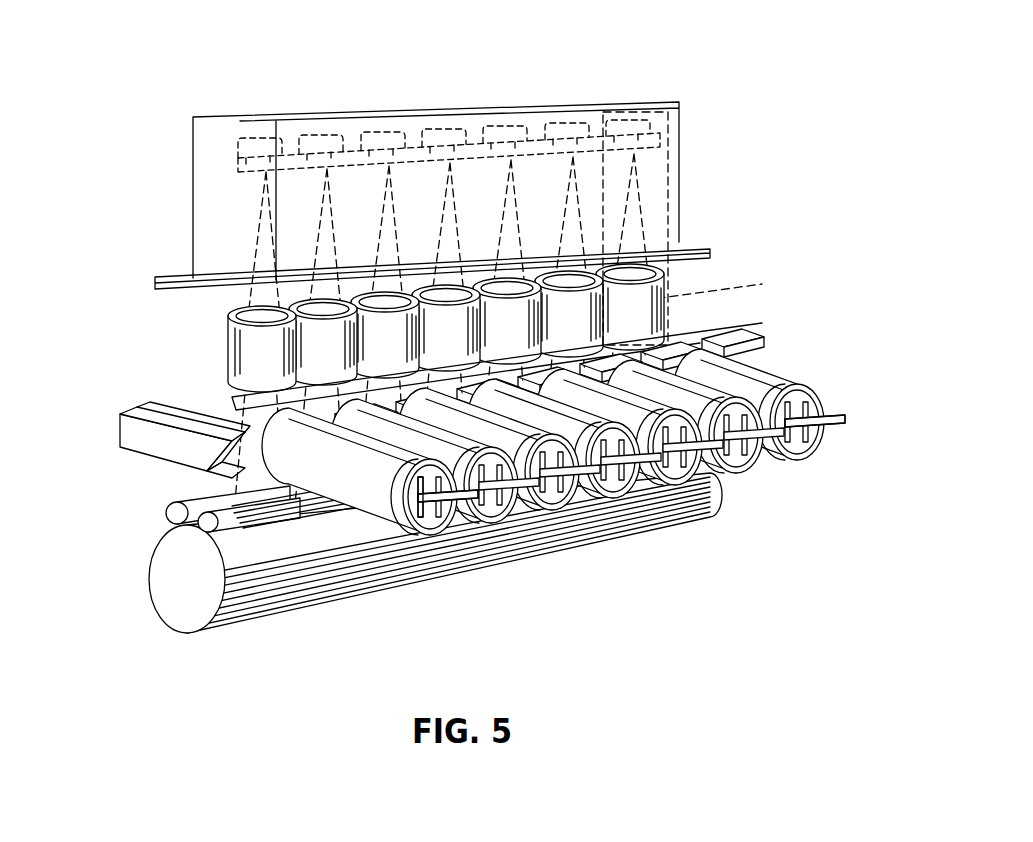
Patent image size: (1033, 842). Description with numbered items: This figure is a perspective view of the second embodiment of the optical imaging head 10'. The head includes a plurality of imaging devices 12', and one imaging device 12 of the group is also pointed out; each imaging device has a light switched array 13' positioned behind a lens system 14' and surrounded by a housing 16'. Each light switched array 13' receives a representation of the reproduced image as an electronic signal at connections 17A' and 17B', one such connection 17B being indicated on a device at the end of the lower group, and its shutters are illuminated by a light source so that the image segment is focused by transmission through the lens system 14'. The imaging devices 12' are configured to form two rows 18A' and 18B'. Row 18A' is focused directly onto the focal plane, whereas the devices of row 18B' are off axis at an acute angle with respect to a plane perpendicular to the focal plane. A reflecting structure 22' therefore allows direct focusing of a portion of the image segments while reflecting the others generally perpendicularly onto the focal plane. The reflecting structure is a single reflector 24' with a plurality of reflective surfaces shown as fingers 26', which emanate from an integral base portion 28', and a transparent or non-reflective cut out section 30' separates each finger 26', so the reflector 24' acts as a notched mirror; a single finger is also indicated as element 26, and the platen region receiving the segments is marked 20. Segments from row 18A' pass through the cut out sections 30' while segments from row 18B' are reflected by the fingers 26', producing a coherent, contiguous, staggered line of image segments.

The optical imaging head 10' is at (486, 191).
The imaging device 12' is at (578, 342).
The dot forming unit 12 is at (759, 449).
The light switched array 13' is at (537, 331).
The lens system 14' is at (446, 328).
The housing 16' is at (538, 466).
The connection 17A' is at (633, 456).
The connection 17B' is at (481, 548).
The support bar 17B is at (832, 385).
The row of imaging devices 18A' is at (438, 330).
The row of imaging devices 18B' is at (385, 553).
The platen rails 20 is at (236, 525).
The reflecting structure 22' is at (84, 434).
The reflector 24' is at (182, 439).
The ramp 26 is at (190, 477).
The finger 26' is at (501, 366).
The integral base portion 28' is at (165, 408).
The cut out section 30' is at (477, 373).